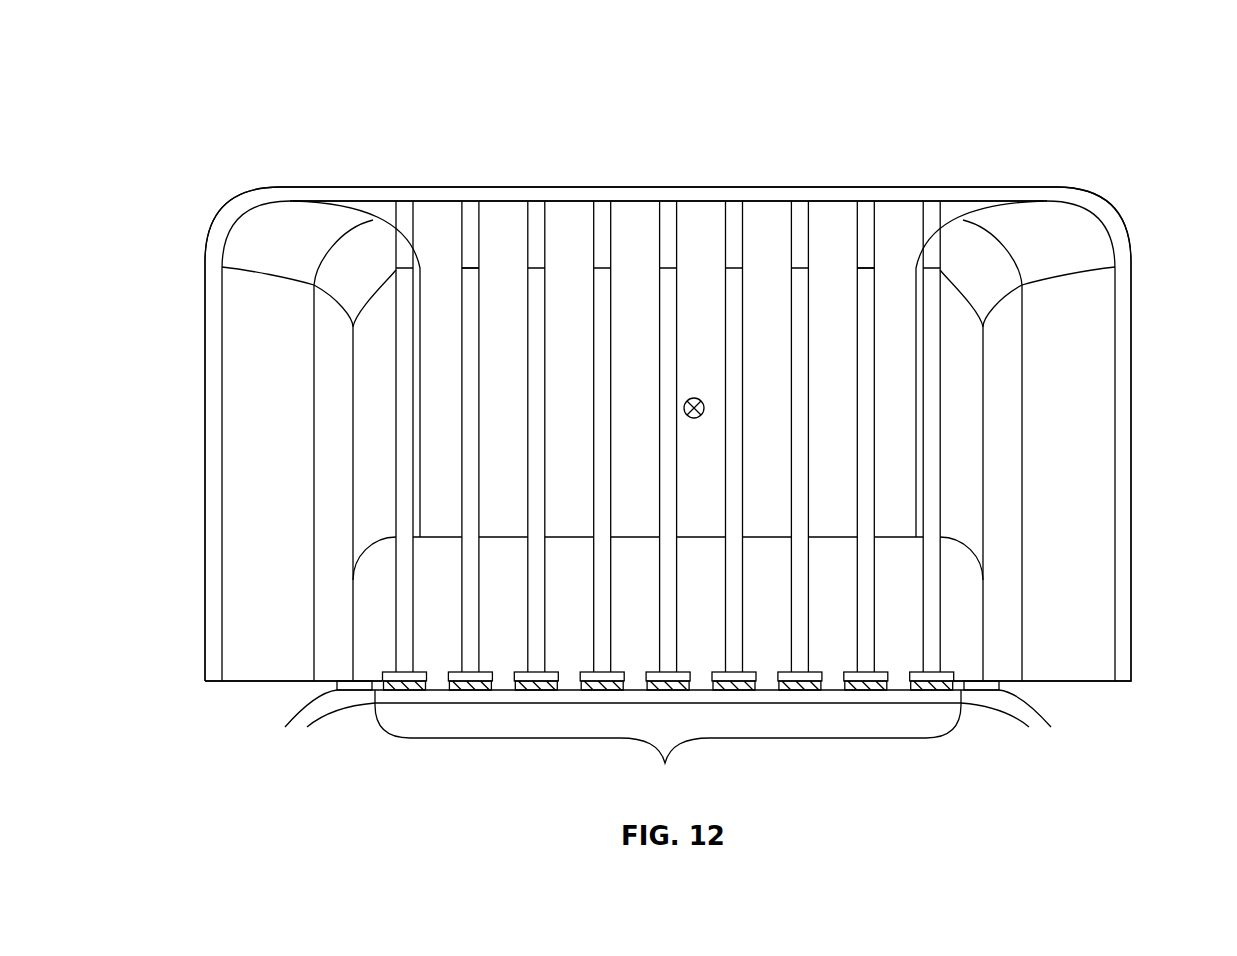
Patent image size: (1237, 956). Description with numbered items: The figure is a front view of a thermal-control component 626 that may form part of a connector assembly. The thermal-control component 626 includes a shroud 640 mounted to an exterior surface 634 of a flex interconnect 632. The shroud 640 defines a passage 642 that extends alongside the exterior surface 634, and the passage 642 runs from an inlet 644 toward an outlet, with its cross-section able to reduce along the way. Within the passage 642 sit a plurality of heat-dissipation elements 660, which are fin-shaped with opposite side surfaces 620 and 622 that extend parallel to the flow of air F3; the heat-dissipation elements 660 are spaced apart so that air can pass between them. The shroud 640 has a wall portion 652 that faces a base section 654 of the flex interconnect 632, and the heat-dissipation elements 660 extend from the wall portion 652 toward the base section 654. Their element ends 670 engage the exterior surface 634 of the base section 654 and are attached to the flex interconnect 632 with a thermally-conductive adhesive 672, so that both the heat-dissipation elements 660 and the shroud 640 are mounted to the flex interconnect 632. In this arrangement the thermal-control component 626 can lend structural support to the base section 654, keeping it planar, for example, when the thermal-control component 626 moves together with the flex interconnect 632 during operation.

The side surface 620 is at (680, 222).
The side surface 622 is at (658, 237).
The thermal-control component 626 is at (1027, 78).
The flex interconnect 632 is at (1052, 723).
The exterior surface 634 is at (895, 685).
The shroud 640 is at (335, 187).
The passage 642 is at (590, 360).
The inlet 644 is at (1067, 247).
The wall portion 652 is at (432, 175).
The base section 654 is at (668, 743).
The heat-dissipation elements 660 is at (479, 235).
The element ends 670 is at (421, 668).
The thermally-conductive adhesive 672 is at (402, 692).
The flow of air F3 is at (697, 398).